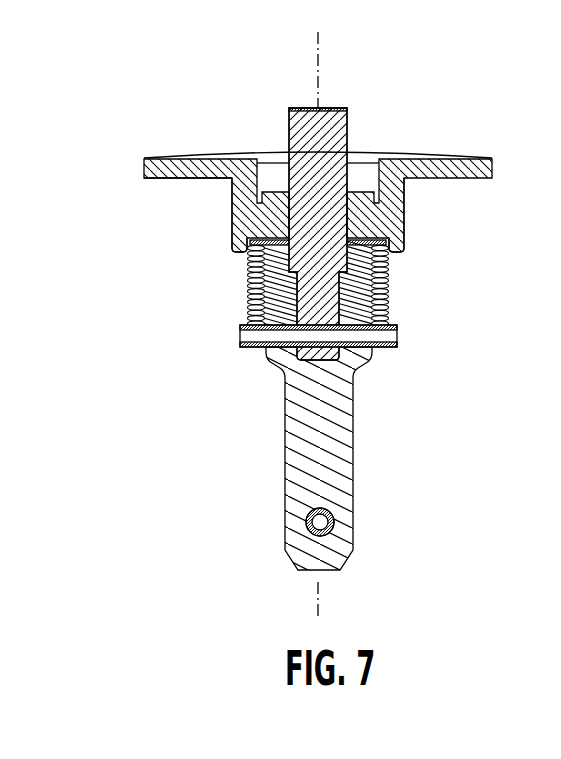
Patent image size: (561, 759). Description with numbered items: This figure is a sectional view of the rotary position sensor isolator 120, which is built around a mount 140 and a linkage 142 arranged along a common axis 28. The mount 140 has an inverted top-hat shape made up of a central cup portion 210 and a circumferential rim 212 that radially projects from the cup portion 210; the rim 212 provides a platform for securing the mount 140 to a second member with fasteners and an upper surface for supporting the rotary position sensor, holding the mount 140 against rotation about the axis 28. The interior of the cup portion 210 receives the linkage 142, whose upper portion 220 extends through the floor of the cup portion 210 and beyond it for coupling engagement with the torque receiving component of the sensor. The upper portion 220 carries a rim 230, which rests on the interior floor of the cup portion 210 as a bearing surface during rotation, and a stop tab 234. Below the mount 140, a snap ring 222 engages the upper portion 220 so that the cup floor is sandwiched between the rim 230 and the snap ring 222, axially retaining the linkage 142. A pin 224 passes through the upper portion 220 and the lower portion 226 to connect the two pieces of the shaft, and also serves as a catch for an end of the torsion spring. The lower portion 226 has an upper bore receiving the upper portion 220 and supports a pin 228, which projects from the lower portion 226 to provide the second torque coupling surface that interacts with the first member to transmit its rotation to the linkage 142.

The axis 28 is at (318, 57).
The rotary position sensor isolator 120 is at (90, 200).
The mount 140 is at (168, 153).
The linkage 142 is at (276, 112).
The cup portion 210 is at (232, 213).
The circumferential rim 212 is at (155, 178).
The upper portion 220 is at (349, 122).
The snap ring 222 is at (404, 230).
The pin 224 is at (396, 347).
The lower portion 226 is at (353, 453).
The pin 228 is at (353, 507).
The rim 230 is at (381, 151).
The stop tab 234 is at (241, 244).